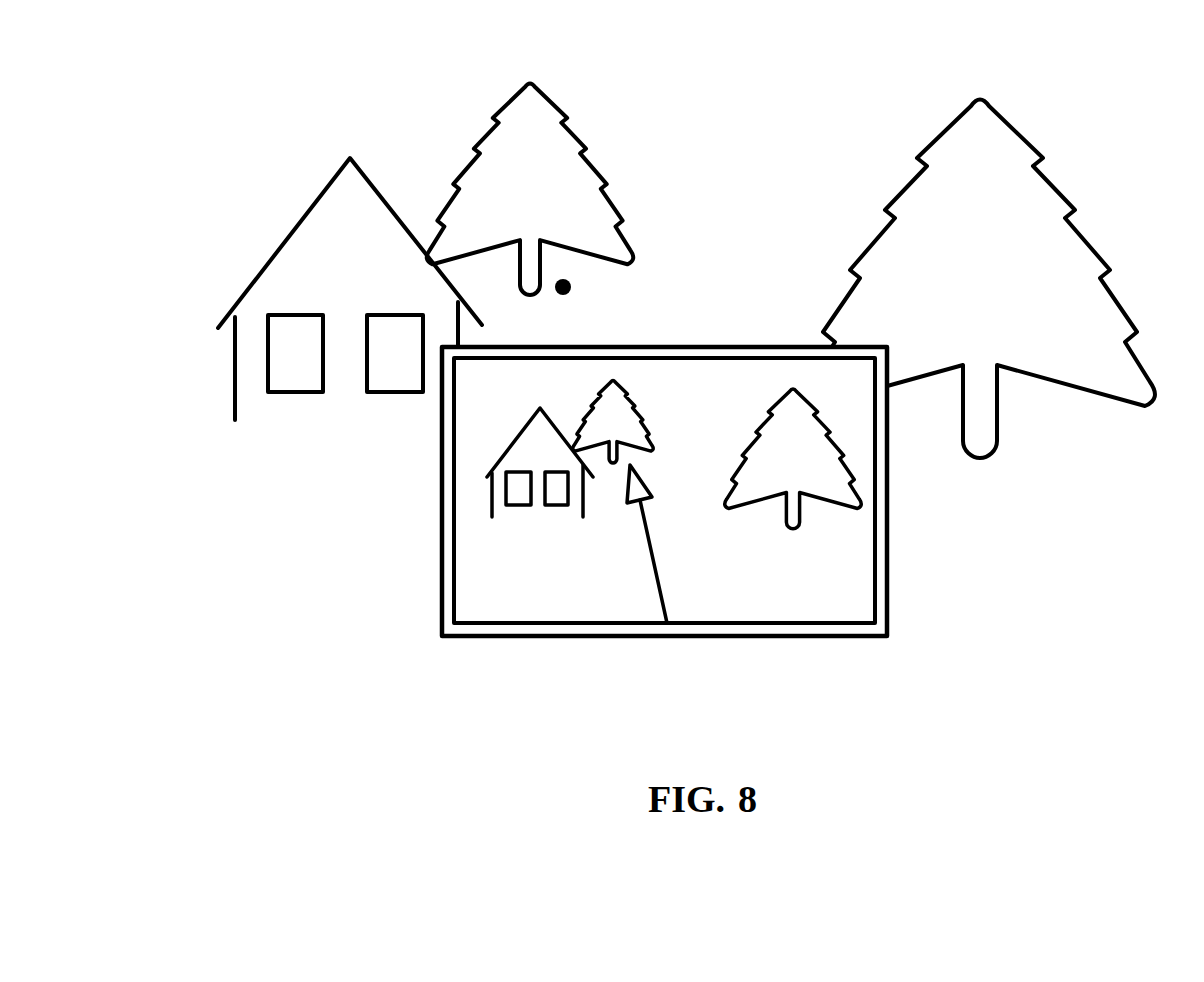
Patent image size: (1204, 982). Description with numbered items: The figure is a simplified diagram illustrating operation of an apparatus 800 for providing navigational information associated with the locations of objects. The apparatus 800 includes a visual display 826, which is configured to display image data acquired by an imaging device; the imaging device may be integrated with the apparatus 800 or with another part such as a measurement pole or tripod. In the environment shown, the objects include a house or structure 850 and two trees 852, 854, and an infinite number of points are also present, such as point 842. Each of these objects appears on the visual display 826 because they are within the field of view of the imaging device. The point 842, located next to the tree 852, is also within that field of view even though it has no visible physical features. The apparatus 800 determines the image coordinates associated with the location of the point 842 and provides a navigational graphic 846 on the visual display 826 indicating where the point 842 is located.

The apparatus 800 is at (438, 600).
The visual display 826 is at (875, 578).
The point 842 is at (572, 287).
The navigational graphic 846 is at (660, 600).
The house or structure 850 is at (292, 228).
The tree 852 is at (517, 90).
The tree 854 is at (962, 102).